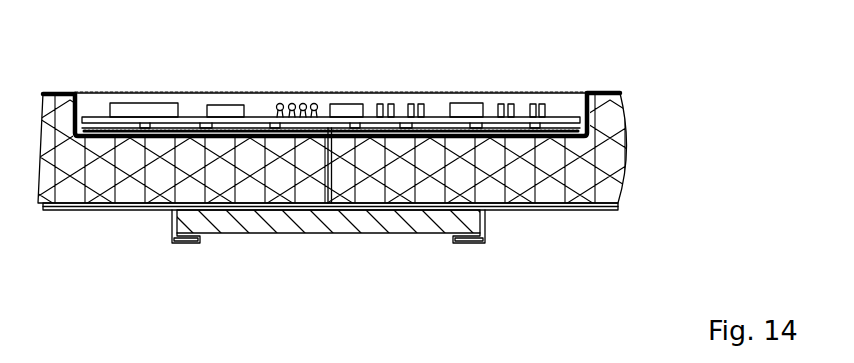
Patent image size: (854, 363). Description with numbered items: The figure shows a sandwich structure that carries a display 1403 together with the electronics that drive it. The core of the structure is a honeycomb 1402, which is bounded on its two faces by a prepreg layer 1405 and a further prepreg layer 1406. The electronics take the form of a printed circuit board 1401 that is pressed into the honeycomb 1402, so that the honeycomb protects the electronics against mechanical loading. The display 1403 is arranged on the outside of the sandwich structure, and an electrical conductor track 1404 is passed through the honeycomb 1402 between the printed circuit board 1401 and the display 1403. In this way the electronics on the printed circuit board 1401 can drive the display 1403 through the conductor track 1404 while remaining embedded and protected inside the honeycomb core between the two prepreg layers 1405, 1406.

The printed circuit board 1401 is at (259, 121).
The honeycomb 1402 is at (613, 181).
The display 1403 is at (292, 229).
The electrical conductor track 1404 is at (332, 182).
The prepreg layer 1405 is at (47, 95).
The prepreg layer 1406 is at (98, 211).